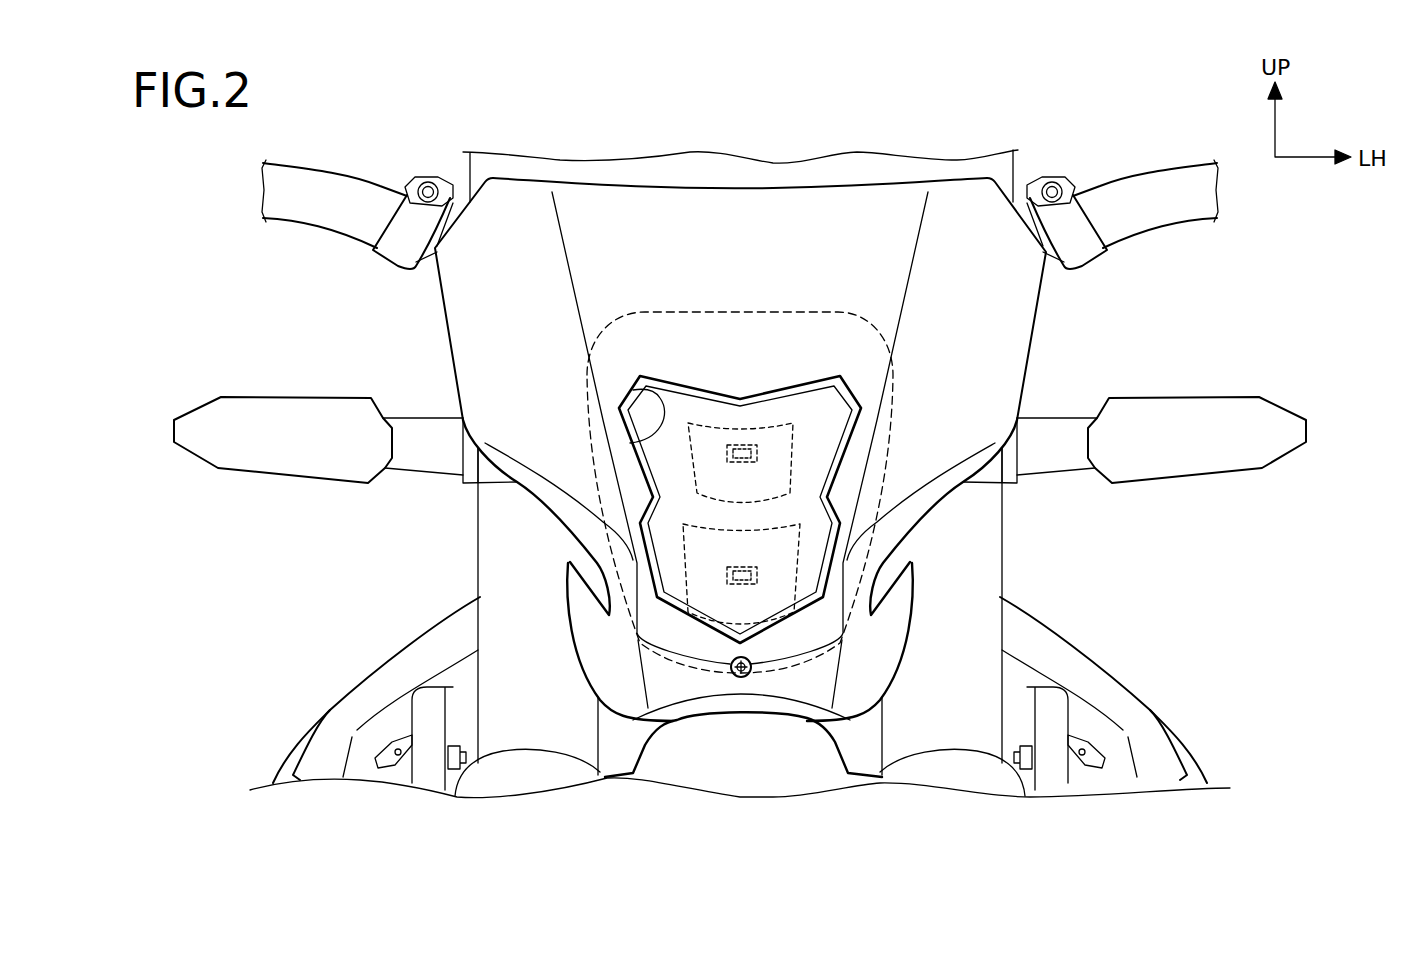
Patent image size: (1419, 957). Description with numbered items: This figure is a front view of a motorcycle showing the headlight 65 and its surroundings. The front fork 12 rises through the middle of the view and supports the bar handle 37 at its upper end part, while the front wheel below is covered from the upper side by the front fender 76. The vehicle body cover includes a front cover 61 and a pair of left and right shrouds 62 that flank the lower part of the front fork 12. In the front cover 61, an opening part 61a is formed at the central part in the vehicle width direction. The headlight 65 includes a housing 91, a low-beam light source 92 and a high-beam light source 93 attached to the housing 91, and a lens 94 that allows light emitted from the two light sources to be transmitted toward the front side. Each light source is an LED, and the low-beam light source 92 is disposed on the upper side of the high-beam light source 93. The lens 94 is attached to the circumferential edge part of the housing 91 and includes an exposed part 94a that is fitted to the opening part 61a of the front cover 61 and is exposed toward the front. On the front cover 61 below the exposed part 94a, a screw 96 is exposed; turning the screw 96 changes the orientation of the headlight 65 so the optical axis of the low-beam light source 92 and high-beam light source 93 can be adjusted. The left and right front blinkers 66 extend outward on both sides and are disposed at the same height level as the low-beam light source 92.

The front fork 12 is at (497, 565).
The bar handle 37 is at (333, 182).
The front cover 61 is at (523, 212).
The opening part 61a is at (655, 400).
The shroud 62 is at (1083, 670).
The headlight 65 is at (683, 378).
The front blinker 66 is at (260, 407).
The front fender 76 is at (827, 768).
The housing 91 is at (837, 310).
The low-beam light source 92 is at (757, 453).
The high-beam light source 93 is at (757, 575).
The lens 94 is at (683, 580).
The exposed part 94a is at (798, 590).
The screw 96 is at (742, 678).